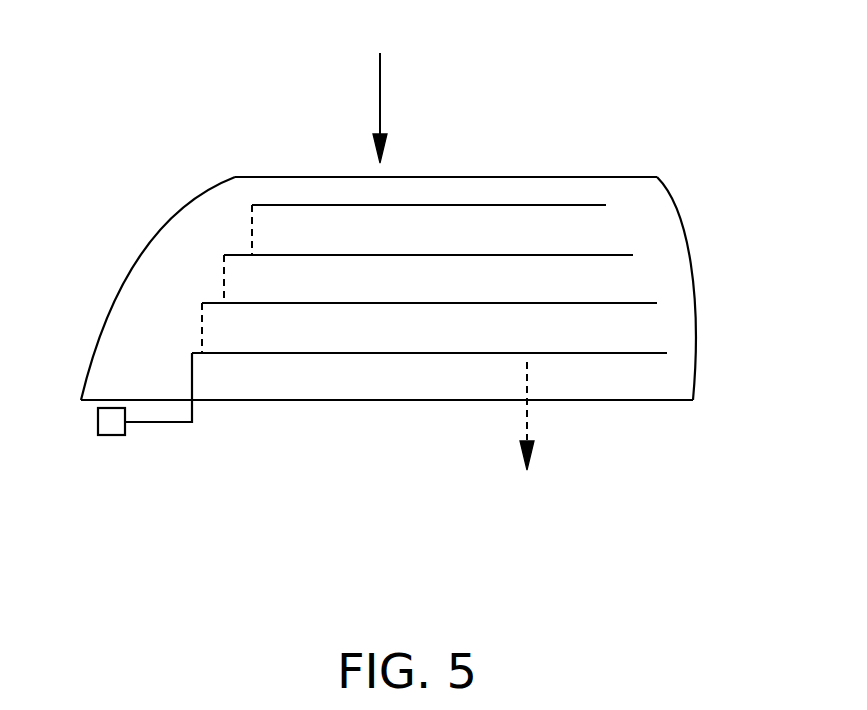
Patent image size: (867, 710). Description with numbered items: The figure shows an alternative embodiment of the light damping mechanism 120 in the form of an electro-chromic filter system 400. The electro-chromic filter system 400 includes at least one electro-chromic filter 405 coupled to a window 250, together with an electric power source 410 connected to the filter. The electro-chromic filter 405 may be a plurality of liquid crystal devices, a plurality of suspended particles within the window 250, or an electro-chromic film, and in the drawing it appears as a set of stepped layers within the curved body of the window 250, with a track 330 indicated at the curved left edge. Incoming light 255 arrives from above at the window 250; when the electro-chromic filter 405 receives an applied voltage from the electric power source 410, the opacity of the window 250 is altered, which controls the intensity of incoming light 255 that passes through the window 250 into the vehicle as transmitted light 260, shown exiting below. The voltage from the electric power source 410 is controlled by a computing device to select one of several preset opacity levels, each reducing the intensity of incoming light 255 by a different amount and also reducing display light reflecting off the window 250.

The electro-chromic filter system 400 is at (618, 72).
The window 250 is at (696, 266).
The track 330 is at (222, 198).
The electro-chromic filter 405 is at (567, 205).
The light damping mechanism 120 is at (267, 480).
The electric power source 410 is at (105, 436).
The incoming light 255 is at (382, 62).
The transmitted light 260 is at (529, 427).